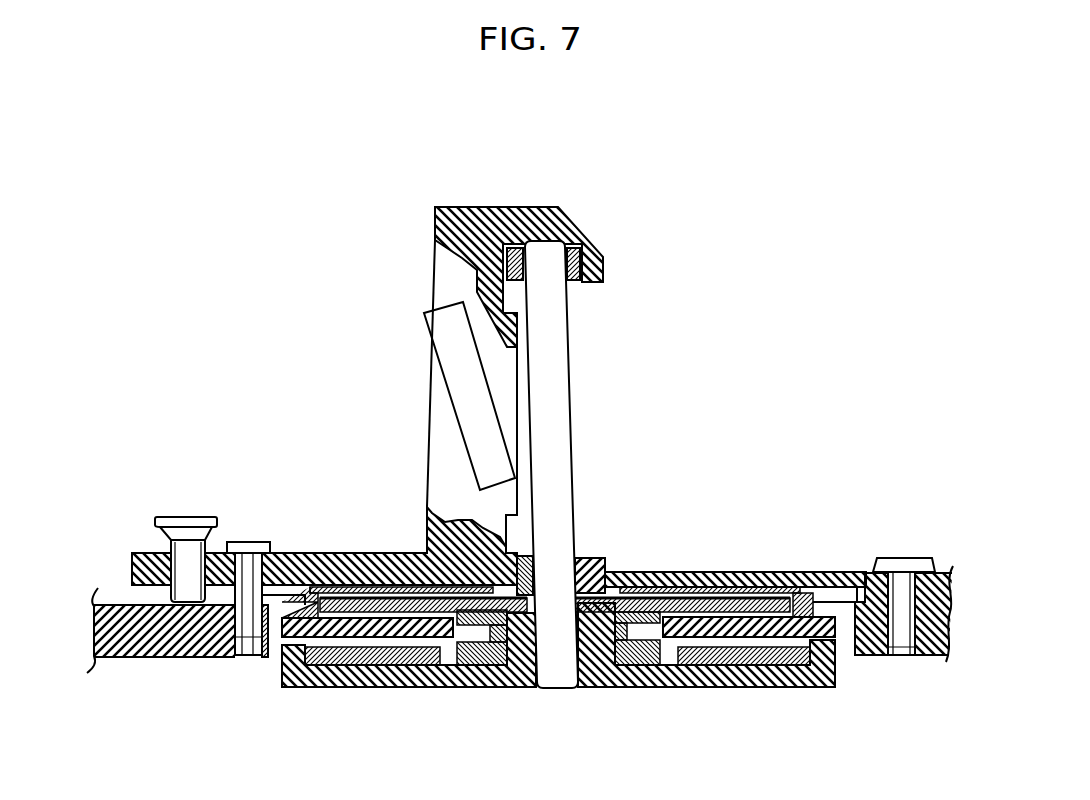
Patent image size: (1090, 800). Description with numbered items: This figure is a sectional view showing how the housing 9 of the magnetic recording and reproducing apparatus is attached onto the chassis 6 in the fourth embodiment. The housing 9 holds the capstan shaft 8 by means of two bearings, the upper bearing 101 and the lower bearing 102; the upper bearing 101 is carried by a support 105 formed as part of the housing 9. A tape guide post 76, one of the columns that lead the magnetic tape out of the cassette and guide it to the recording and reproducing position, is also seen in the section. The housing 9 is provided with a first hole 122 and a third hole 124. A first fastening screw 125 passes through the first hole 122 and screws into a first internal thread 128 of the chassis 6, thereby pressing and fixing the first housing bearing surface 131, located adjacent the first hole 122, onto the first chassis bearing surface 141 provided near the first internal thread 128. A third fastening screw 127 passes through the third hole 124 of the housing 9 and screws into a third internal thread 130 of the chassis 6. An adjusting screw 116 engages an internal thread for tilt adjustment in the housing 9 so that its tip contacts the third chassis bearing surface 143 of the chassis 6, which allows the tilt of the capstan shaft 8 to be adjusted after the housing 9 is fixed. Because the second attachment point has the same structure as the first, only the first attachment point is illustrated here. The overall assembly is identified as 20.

The chassis 6 is at (927, 653).
The capstan shaft 8 is at (553, 413).
The housing 9 is at (457, 220).
The optical pickup unit 20 is at (160, 553).
The tape guide post 76 is at (472, 383).
The upper bearing 101 is at (575, 280).
The bearing 102 is at (585, 557).
The support 105 is at (448, 452).
The adjusting screw 116 is at (183, 517).
The first hole 122 is at (870, 572).
The third hole 124 is at (275, 555).
The first fastening screw 125 is at (898, 558).
The third fastening screw 127 is at (243, 542).
The first internal thread 128 is at (908, 653).
The third internal thread 130 is at (237, 655).
The first housing bearing surface 131 is at (935, 585).
The first chassis bearing surface 141 is at (860, 655).
The third chassis bearing surface 143 is at (180, 610).